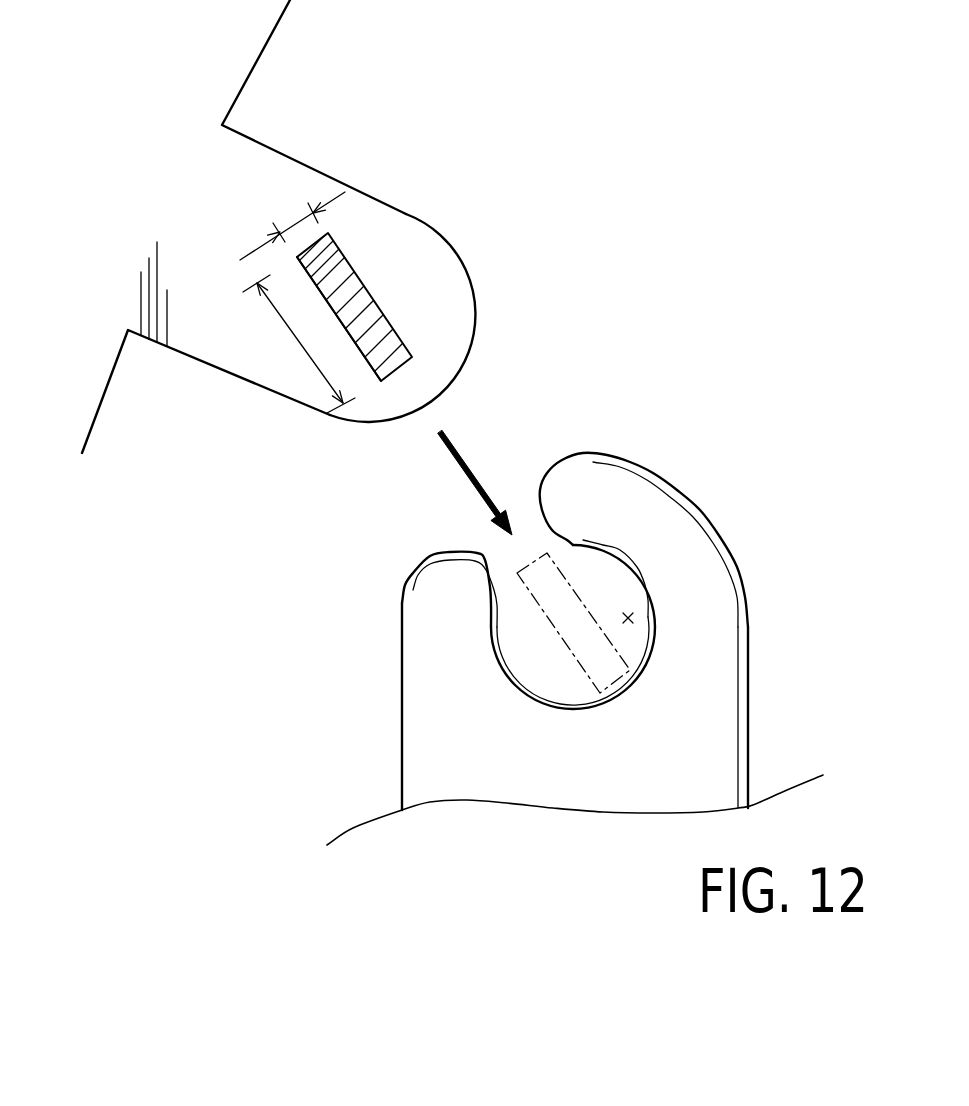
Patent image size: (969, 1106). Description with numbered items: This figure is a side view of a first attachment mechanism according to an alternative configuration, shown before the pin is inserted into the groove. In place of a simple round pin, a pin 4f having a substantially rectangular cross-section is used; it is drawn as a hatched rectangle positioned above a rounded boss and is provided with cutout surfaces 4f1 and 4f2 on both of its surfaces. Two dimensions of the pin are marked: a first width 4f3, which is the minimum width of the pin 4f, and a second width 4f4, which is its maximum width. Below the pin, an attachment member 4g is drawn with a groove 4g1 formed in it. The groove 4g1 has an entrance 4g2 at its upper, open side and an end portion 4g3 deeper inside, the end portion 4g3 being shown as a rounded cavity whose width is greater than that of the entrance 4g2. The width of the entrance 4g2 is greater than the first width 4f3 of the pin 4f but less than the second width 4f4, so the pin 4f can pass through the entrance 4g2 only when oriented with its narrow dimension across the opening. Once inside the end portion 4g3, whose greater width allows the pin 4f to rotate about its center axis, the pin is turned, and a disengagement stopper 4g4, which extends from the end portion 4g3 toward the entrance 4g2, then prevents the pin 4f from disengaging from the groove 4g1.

The pin 4f is at (360, 258).
The cutout surface 4f1 is at (350, 323).
The cutout surface 4f2 is at (387, 318).
The first width 4f3 is at (292, 215).
The second width 4f4 is at (293, 344).
The attachment member 4g is at (742, 547).
The groove 4g1 is at (528, 543).
The entrance 4g2 is at (482, 552).
The end portion 4g3 is at (637, 615).
The disengagement stopper 4g4 is at (600, 548).